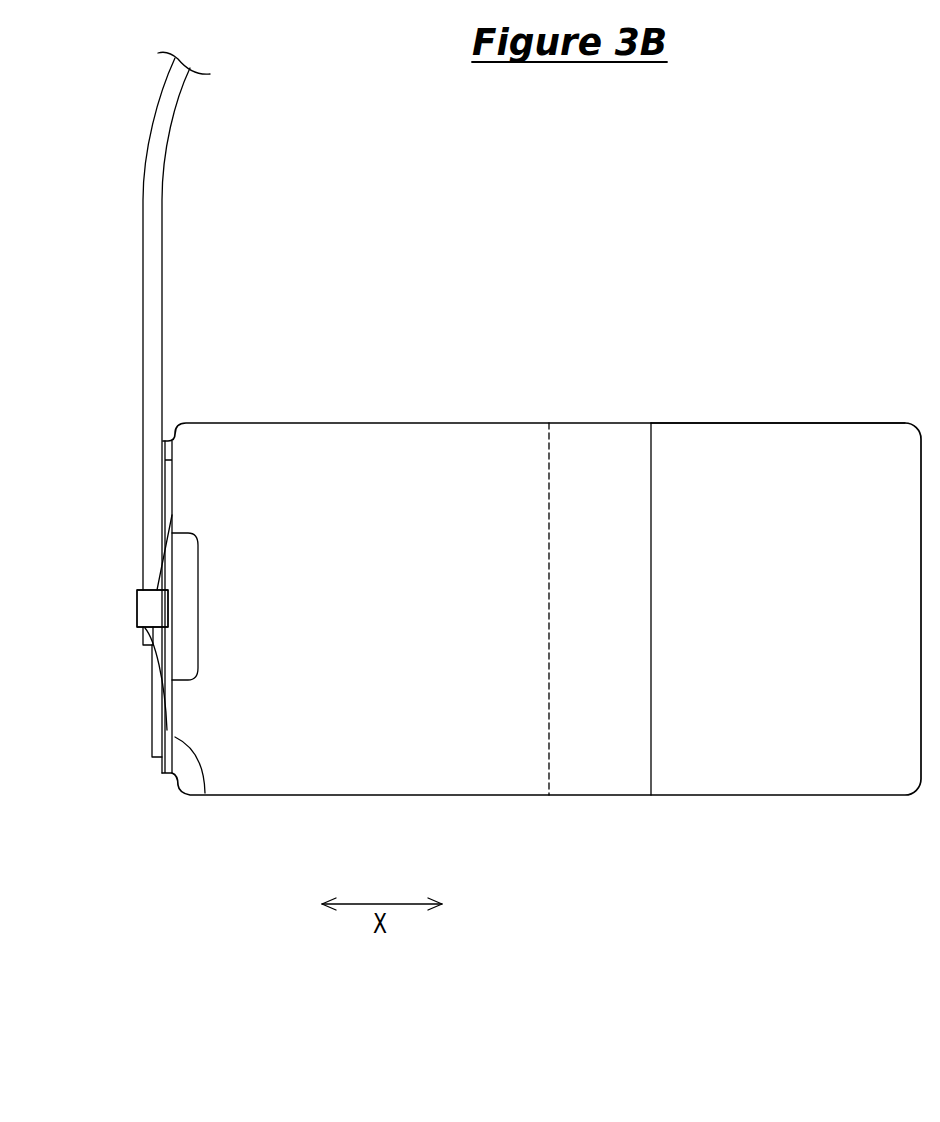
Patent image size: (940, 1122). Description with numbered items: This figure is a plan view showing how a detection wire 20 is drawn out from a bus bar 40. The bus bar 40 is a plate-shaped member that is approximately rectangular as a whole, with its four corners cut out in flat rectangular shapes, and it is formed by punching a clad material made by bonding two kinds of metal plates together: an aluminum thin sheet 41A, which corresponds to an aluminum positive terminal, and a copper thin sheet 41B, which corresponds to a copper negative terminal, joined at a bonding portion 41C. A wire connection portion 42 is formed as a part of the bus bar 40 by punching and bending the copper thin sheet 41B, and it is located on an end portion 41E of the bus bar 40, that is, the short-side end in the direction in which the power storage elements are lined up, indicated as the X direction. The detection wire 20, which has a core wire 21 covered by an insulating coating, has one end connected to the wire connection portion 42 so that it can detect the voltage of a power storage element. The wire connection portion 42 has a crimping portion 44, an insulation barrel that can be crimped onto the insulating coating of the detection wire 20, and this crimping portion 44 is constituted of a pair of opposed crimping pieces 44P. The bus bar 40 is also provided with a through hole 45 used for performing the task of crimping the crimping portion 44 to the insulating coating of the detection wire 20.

The detection wire 20 is at (177, 247).
The core wire 21 is at (152, 722).
The bus bar 40 is at (602, 822).
The aluminum thin sheet 41A is at (693, 445).
The copper thin sheet 41B is at (417, 460).
The bonding portion 41C is at (612, 445).
The end portion 41E is at (205, 798).
The wire connection portion 42 is at (165, 437).
The crimping portion 44 is at (103, 614).
The crimping piece 44P is at (145, 613).
The through hole 45 is at (193, 600).